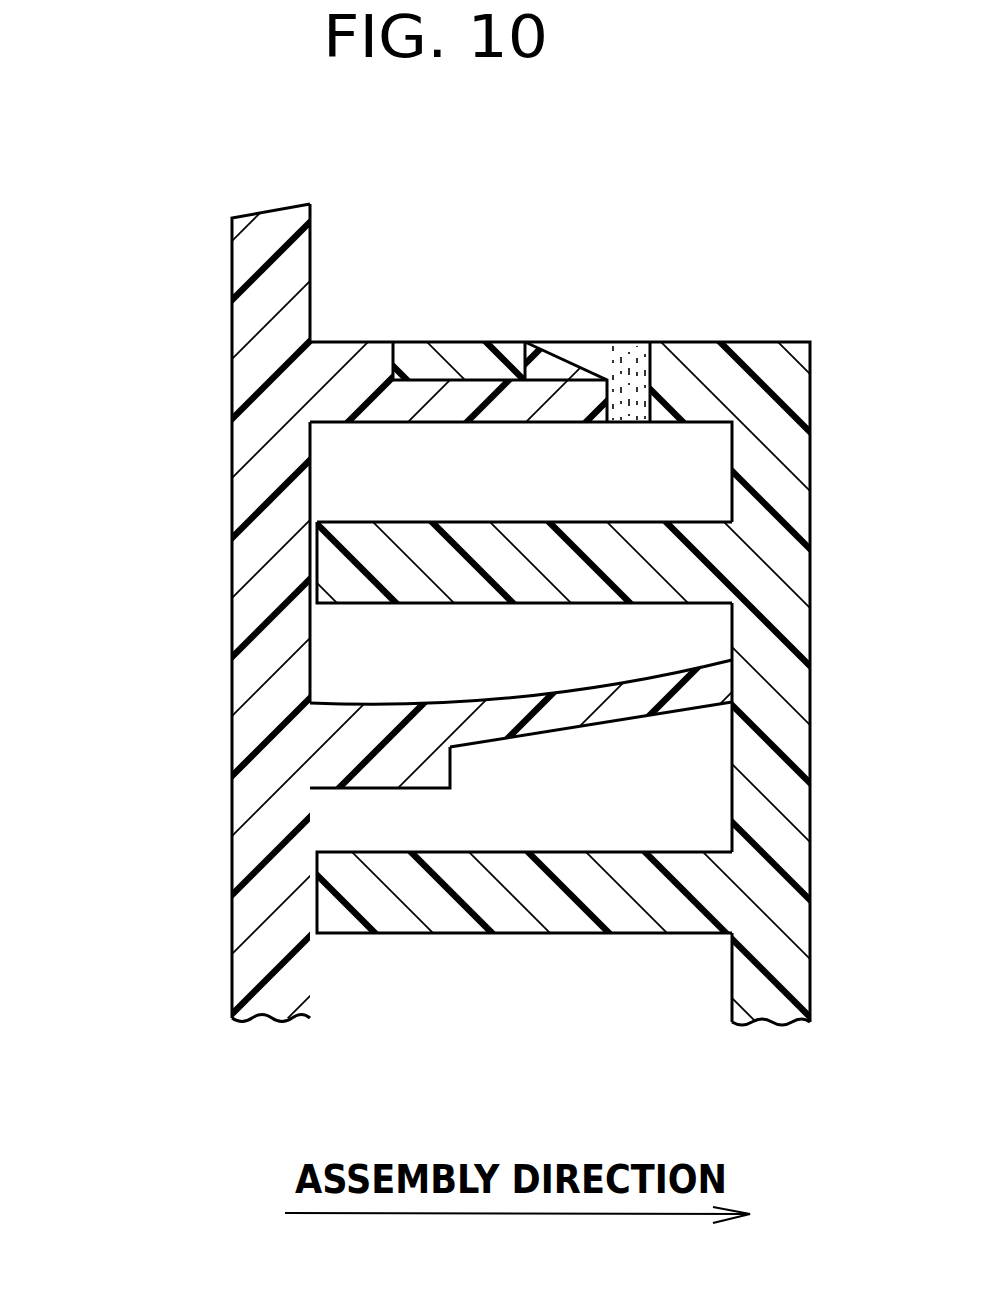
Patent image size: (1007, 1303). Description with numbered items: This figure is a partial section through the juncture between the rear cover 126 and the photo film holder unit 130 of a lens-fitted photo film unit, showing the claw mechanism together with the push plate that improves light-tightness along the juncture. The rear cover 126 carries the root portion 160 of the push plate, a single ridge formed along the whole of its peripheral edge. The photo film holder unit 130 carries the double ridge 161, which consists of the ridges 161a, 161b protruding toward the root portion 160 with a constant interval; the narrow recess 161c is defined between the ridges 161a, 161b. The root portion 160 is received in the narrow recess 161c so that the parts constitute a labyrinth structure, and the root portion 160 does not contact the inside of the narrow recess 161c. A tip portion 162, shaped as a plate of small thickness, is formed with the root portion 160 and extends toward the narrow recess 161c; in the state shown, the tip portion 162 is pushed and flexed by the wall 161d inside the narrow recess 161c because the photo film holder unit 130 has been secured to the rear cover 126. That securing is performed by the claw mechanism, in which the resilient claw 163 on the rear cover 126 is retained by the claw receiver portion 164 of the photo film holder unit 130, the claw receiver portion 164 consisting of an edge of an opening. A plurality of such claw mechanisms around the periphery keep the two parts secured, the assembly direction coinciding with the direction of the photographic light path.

The rear cover 126 is at (205, 300).
The photo film holder unit 130 is at (777, 312).
The root portion 160 is at (384, 779).
The double ridge 161 is at (698, 506).
The ridge 161a is at (438, 521).
The ridge 161b is at (516, 937).
The narrow recess 161c is at (437, 605).
The wall 161d is at (730, 743).
The tip portion 162 is at (575, 737).
The resilient claw 163 is at (555, 367).
The claw receiver portion 164 is at (636, 355).